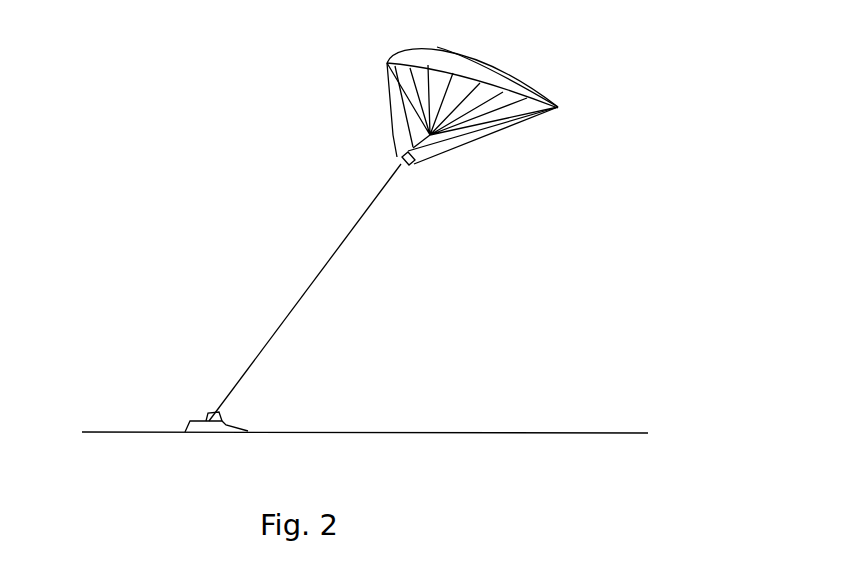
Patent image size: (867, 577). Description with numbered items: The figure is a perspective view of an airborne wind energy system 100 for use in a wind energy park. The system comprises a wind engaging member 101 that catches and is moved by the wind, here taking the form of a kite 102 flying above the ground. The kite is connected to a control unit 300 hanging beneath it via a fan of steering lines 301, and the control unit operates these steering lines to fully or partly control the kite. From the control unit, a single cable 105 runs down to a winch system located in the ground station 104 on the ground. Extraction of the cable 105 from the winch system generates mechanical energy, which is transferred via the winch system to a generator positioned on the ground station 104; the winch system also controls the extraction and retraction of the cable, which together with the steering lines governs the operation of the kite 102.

The airborne wind energy system 100 is at (357, 240).
The wind engaging member 101 is at (530, 105).
The kite 102 is at (520, 90).
The ground station 104 is at (207, 422).
The cable 105 is at (286, 316).
The control unit 300 is at (407, 157).
The steering lines 301 is at (402, 103).